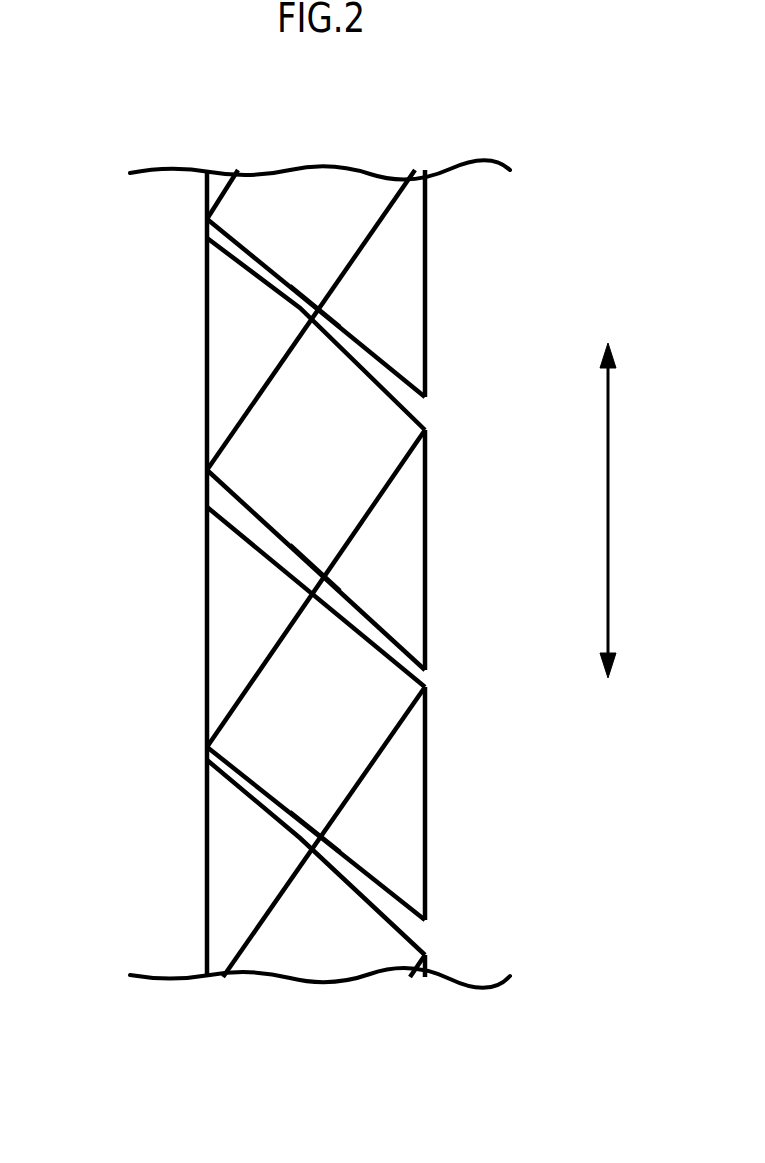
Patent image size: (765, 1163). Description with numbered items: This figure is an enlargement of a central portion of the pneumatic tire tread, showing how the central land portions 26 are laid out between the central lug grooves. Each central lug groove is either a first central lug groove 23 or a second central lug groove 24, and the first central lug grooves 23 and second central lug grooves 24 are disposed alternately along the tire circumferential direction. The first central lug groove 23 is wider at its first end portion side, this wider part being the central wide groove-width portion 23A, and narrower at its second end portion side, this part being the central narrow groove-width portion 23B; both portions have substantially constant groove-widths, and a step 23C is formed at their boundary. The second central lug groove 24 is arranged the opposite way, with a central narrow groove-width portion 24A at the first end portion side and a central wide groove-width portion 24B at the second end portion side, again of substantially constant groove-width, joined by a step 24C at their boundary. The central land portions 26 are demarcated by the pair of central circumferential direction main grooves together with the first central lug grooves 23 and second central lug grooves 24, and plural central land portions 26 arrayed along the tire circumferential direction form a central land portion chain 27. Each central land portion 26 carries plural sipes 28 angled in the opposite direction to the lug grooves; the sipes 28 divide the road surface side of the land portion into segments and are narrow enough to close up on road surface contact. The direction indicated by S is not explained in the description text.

The first central lug groove 23 is at (231, 578).
The central wide groove-width portion 23A is at (258, 532).
The central narrow groove-width portion 23B is at (383, 642).
The step 23C is at (330, 607).
The second central lug groove 24 is at (315, 587).
The central narrow groove-width portion 24A is at (255, 267).
The central wide groove-width portion 24B is at (382, 378).
The step 24C is at (307, 298).
The central land portion 26 is at (428, 308).
The central land portion chain 27 is at (422, 141).
The sipe 28 is at (247, 418).
The pitch direction S is at (610, 507).